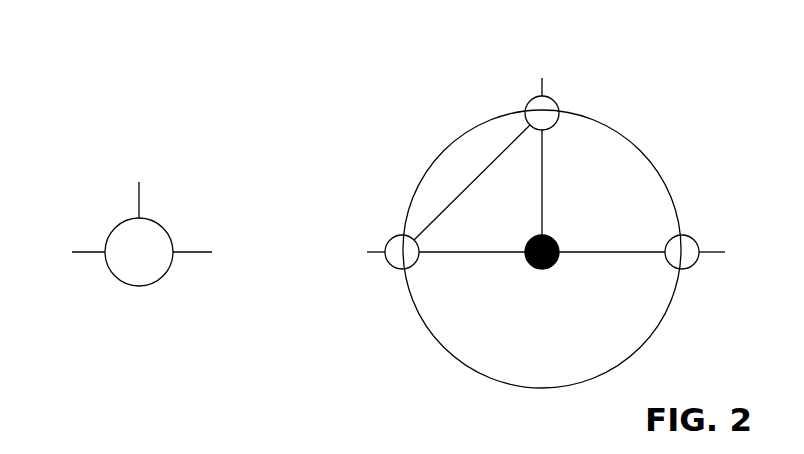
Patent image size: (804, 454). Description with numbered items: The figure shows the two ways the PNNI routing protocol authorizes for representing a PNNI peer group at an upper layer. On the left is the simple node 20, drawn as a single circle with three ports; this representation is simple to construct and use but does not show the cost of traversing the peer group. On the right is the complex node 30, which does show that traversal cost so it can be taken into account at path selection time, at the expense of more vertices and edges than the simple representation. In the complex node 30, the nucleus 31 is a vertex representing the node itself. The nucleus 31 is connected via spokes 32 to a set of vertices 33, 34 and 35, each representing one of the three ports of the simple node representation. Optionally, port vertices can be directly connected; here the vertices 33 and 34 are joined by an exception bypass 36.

The simple node 20 is at (160, 268).
The complex node 30 is at (690, 48).
The nucleus 31 is at (560, 248).
The spokes 32 is at (468, 253).
The vertex 33 is at (393, 267).
The vertex 34 is at (550, 98).
The vertex 35 is at (695, 236).
The exception bypass 36 is at (452, 192).